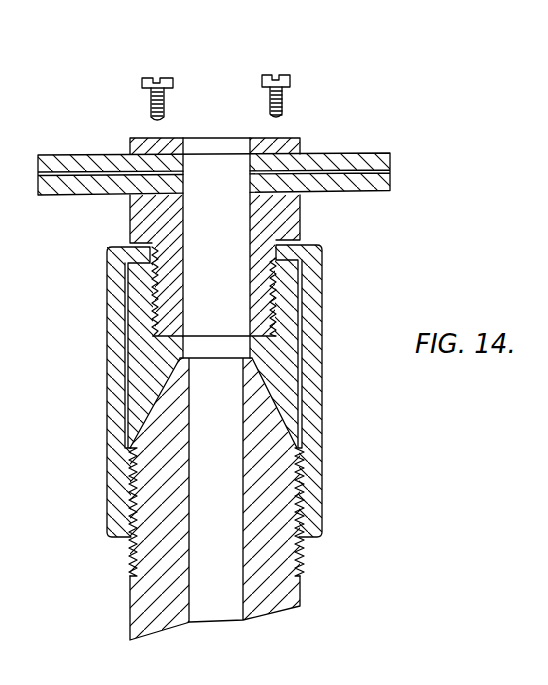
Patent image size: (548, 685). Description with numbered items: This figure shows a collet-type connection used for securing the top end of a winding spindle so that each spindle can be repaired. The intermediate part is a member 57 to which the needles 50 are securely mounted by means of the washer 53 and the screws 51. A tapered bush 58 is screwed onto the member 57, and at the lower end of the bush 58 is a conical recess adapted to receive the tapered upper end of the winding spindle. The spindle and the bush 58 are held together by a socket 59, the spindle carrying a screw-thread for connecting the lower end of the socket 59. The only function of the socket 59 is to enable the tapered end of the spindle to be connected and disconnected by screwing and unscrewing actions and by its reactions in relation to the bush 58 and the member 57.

The needles 50 is at (108, 161).
The screws 51 is at (271, 76).
The washer 53 is at (300, 139).
The member 57 is at (287, 223).
The tapered bush 58 is at (140, 362).
The socket 59 is at (315, 435).